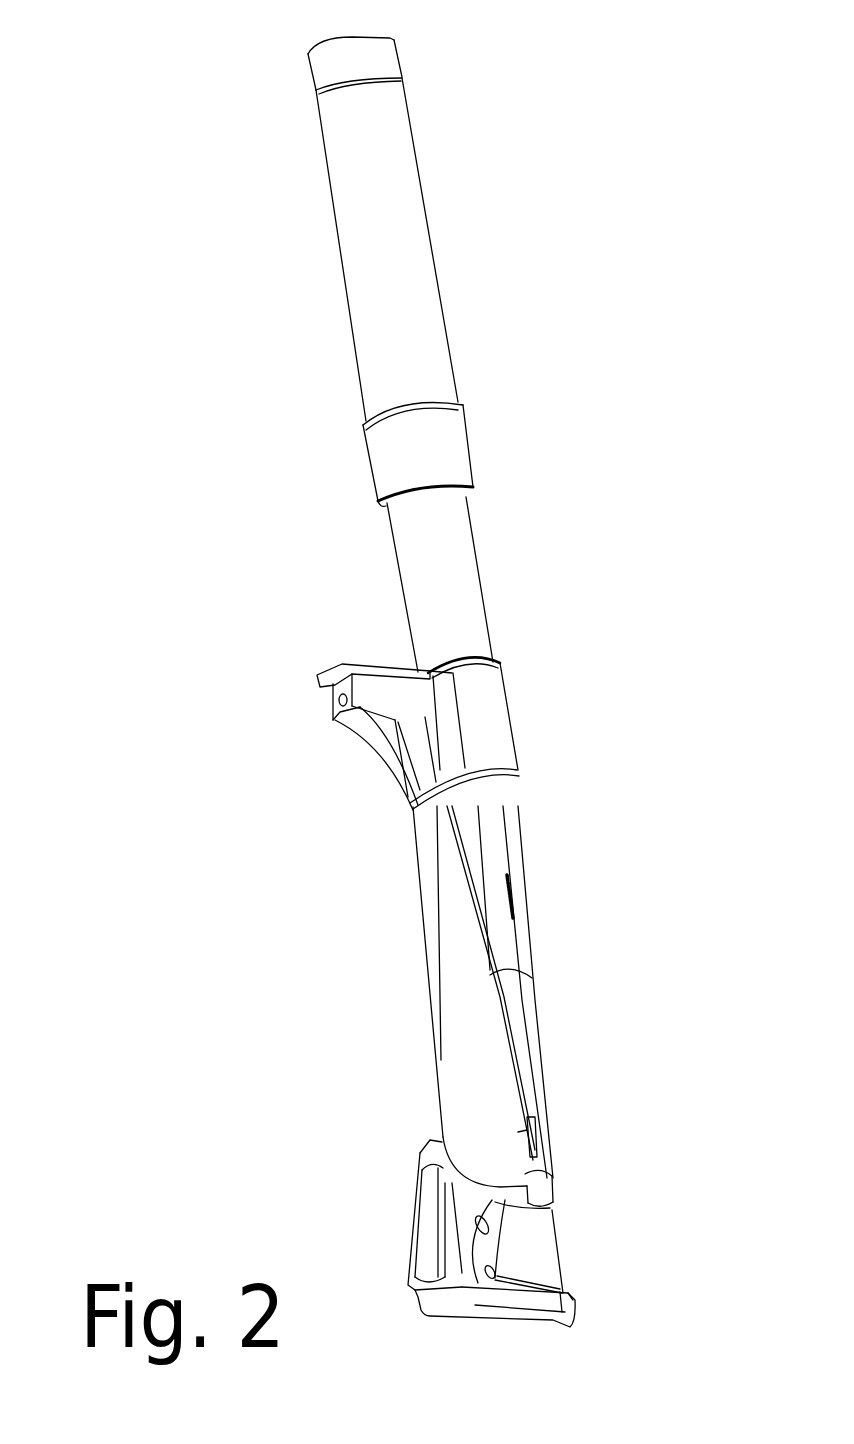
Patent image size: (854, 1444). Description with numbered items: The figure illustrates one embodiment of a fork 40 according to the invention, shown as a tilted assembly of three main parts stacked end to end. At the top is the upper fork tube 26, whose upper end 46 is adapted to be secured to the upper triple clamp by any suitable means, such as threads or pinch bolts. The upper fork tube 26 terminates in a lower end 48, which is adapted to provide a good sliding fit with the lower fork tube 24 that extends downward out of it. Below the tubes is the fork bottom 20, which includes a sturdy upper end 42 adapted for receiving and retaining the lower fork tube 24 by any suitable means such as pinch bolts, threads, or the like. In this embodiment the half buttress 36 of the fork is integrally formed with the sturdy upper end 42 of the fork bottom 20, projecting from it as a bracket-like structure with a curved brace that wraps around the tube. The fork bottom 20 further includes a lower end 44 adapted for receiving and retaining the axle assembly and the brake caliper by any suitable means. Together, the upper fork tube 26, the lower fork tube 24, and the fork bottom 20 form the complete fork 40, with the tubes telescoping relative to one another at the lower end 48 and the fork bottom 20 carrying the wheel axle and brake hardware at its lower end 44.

The fork bottom 20 is at (523, 925).
The lower fork tube 24 is at (442, 565).
The upper fork tube 26 is at (392, 193).
The half buttress 36 is at (370, 690).
The fork 40 is at (303, 1037).
The sturdy upper end 42 is at (490, 715).
The lower end 44 is at (550, 1237).
The upper end 46 is at (373, 50).
The lower end 48 is at (443, 443).